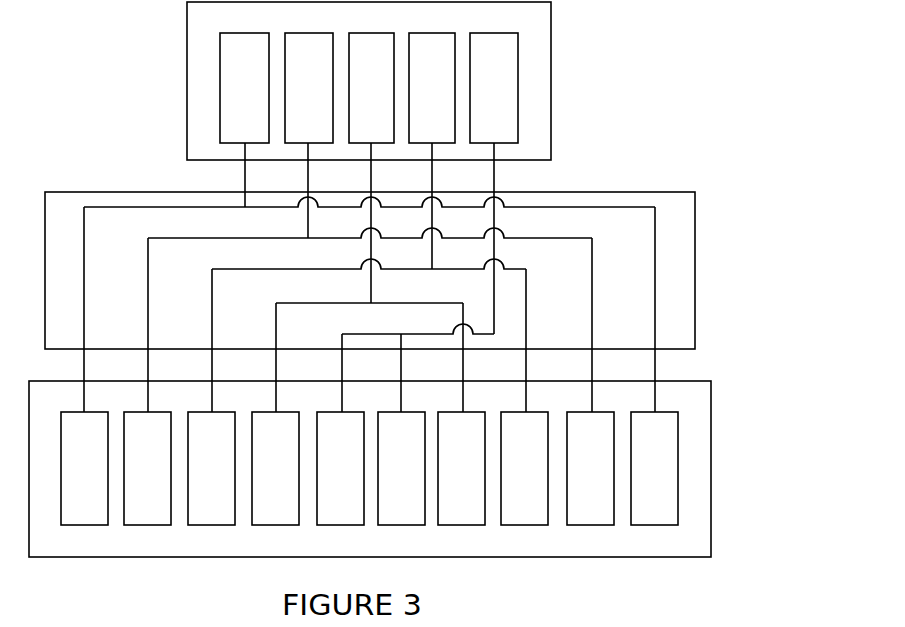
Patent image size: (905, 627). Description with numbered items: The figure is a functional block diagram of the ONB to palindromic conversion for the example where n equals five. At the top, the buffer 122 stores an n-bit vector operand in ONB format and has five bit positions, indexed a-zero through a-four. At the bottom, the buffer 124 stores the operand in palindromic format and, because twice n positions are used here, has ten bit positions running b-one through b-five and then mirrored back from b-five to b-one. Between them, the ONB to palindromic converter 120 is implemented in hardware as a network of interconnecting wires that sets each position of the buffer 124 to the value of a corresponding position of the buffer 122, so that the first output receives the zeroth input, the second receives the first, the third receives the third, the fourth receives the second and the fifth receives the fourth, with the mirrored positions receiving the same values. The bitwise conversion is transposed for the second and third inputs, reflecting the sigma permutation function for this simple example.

The buffer 122 is at (551, 79).
The ONB to palindromic converter 120 is at (695, 270).
The buffer 124 is at (711, 467).